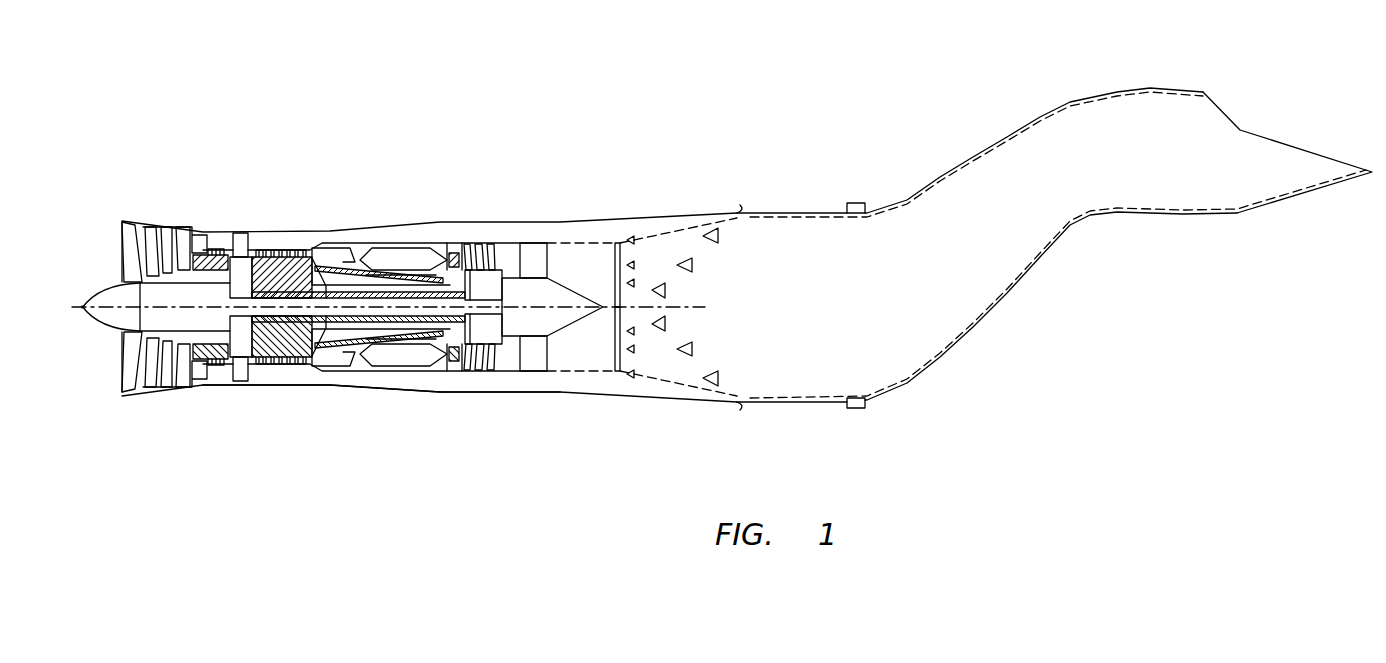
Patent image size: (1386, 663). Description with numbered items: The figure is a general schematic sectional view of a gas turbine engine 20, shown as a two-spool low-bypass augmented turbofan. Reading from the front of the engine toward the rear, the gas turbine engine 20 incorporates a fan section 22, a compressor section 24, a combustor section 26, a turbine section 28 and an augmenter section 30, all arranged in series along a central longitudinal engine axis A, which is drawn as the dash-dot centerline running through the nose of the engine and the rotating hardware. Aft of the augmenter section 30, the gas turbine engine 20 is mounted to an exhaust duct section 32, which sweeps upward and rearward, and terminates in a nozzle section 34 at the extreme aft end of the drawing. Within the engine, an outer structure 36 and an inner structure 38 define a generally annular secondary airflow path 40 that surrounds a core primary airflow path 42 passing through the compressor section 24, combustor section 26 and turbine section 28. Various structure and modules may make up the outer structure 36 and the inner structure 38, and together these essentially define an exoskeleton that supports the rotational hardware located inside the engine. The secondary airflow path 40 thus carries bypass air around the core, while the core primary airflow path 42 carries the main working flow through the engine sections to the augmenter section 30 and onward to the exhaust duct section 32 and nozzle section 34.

The gas turbine engine 20 is at (505, 126).
The fan section 22 is at (122, 200).
The compressor section 24 is at (206, 200).
The combustor section 26 is at (312, 200).
The turbine section 28 is at (443, 200).
The augmenter section 30 is at (735, 200).
The exhaust duct section 32 is at (980, 139).
The nozzle section 34 is at (1292, 139).
The outer structure 36 is at (440, 396).
The inner structure 38 is at (455, 381).
The secondary airflow path 40 is at (370, 388).
The core primary airflow path 42 is at (300, 370).
The central longitudinal engine axis A is at (105, 309).